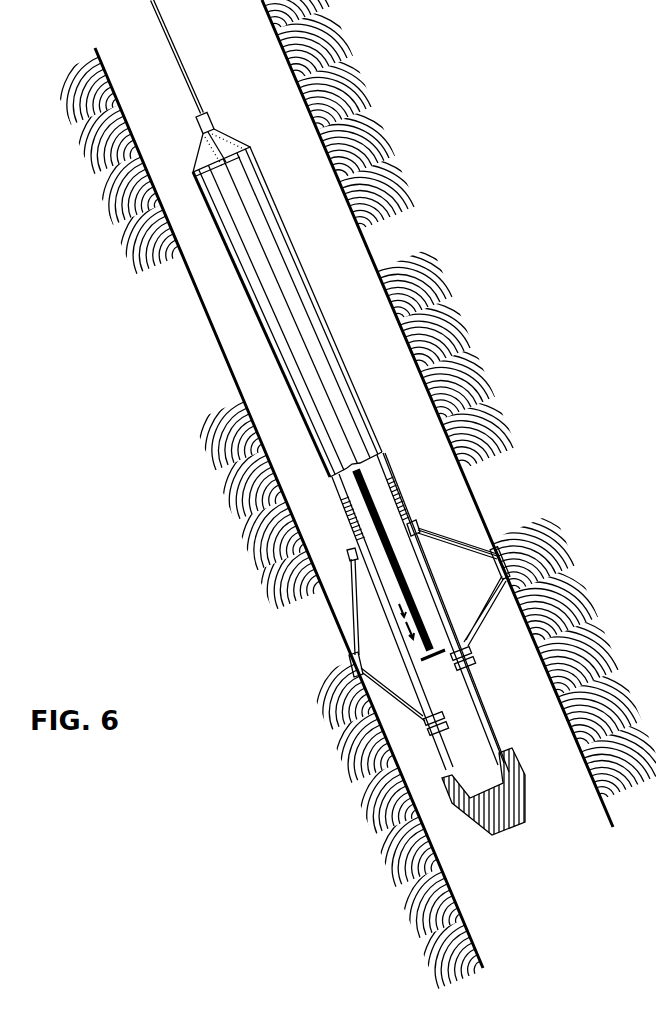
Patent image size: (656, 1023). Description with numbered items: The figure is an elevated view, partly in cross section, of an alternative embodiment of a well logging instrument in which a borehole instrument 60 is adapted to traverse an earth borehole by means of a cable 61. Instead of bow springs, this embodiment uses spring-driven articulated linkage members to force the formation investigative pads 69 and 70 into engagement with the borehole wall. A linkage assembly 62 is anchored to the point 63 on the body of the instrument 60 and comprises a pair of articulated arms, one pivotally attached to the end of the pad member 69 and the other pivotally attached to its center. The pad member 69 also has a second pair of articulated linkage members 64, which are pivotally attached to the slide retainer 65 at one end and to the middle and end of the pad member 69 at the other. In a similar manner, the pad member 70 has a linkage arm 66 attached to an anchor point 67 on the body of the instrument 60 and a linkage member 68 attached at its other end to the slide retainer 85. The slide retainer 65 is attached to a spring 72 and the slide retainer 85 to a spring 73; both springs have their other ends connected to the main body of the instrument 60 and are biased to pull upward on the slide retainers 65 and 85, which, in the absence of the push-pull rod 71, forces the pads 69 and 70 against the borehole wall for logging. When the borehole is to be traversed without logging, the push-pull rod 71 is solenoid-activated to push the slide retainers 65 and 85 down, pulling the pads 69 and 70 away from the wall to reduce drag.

The borehole instrument 60 is at (268, 197).
The cable 61 is at (180, 47).
The linkage assembly 62 is at (436, 541).
The anchor point 63 is at (419, 527).
The second pair of articulated linkage members 64 is at (480, 633).
The slide retainer 65 is at (478, 662).
The linkage arm 66 is at (354, 581).
The anchor point 67 is at (348, 554).
The linkage member 68 is at (378, 693).
The formation investigative pad 69 is at (502, 552).
The formation investigative pad 70 is at (350, 660).
The push-pull rod 71 is at (403, 592).
The spring 72 is at (400, 502).
The spring 73 is at (341, 521).
The slide retainer 85 is at (436, 737).